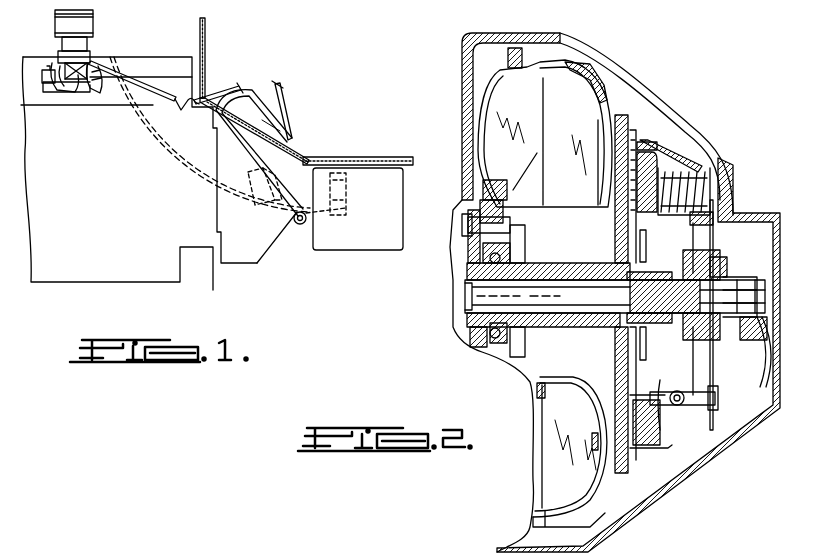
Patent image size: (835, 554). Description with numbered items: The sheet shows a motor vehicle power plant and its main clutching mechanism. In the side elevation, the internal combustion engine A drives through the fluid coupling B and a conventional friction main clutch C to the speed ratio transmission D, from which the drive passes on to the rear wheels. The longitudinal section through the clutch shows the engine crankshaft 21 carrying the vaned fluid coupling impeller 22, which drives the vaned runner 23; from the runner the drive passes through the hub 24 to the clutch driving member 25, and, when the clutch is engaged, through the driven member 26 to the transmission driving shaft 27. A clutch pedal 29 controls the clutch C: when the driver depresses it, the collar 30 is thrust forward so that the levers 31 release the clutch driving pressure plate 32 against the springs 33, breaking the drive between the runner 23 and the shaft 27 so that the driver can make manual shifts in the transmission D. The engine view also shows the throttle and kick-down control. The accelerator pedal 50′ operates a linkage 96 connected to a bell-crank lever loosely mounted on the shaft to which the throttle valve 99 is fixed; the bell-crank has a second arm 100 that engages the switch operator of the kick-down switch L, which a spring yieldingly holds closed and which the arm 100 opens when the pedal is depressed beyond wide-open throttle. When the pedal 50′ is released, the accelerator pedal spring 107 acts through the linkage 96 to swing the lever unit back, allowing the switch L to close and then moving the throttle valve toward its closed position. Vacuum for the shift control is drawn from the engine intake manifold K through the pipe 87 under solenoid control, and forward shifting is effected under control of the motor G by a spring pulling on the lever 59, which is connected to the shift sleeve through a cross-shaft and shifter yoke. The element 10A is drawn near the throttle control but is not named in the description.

In FIG. 1, the switch 10A is at (55, 62).
In FIG. 1, the pipe 87 is at (108, 57).
In FIG. 1, the internal combustion engine A is at (152, 58).
In FIG. 1, the throttle valve 99 is at (72, 82).
In FIG. 1, the engine intake manifold K is at (93, 95).
In FIG. 1, the kick-down switch L is at (24, 106).
In FIG. 1, the second arm 100 is at (63, 92).
In FIG. 1, the linkage 96 is at (216, 95).
In FIG. 1, the clutch pedal 29 is at (291, 92).
In FIG. 1, the accelerator pedal spring 107 is at (270, 108).
In FIG. 1, the accelerator pedal 50′ is at (281, 128).
In FIG. 1, the speed ratio transmission D is at (368, 188).
In FIG. 1, the motor G is at (291, 218).
In FIG. 1, the lever 59 is at (352, 215).
In FIG. 2, the fluid coupling impeller 22 is at (490, 97).
In FIG. 2, the fluid coupling B is at (583, 68).
In FIG. 2, the runner 23 is at (590, 90).
In FIG. 2, the clutch driving member 25 is at (620, 122).
In FIG. 2, the friction main clutch C is at (663, 142).
In FIG. 2, the springs 33 is at (680, 172).
In FIG. 2, the engine crankshaft 21 is at (460, 257).
In FIG. 2, the hub 24 is at (615, 295).
In FIG. 2, the driven member 26 is at (647, 240).
In FIG. 2, the collar 30 is at (722, 258).
In FIG. 2, the transmission driving shaft 27 is at (750, 303).
In FIG. 2, the levers 31 is at (697, 367).
In FIG. 2, the pressure plate 32 is at (657, 427).